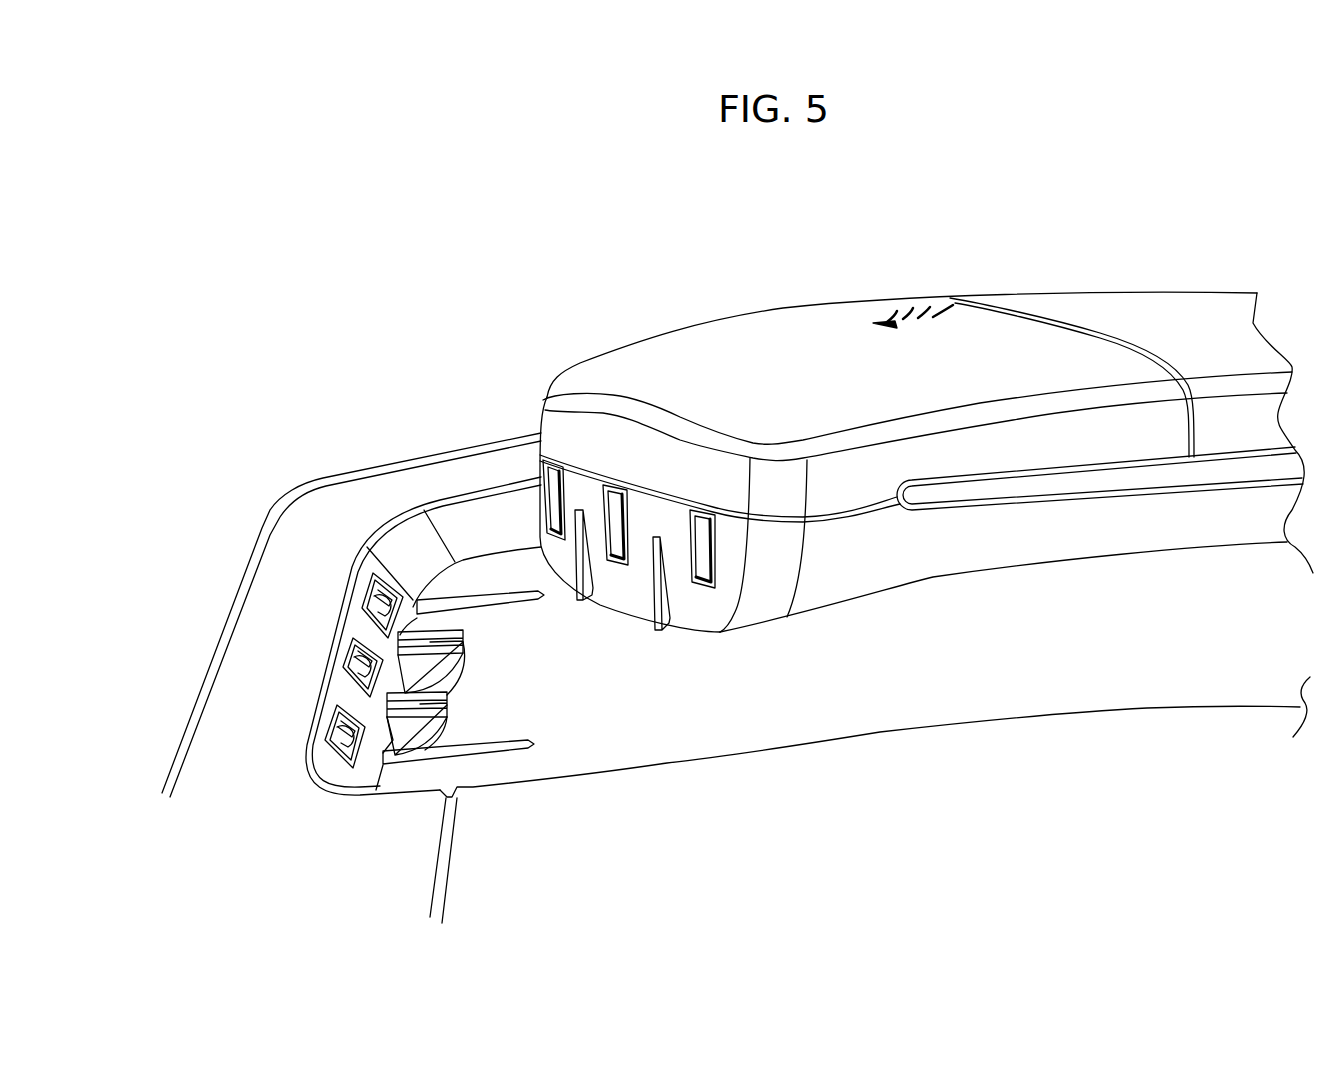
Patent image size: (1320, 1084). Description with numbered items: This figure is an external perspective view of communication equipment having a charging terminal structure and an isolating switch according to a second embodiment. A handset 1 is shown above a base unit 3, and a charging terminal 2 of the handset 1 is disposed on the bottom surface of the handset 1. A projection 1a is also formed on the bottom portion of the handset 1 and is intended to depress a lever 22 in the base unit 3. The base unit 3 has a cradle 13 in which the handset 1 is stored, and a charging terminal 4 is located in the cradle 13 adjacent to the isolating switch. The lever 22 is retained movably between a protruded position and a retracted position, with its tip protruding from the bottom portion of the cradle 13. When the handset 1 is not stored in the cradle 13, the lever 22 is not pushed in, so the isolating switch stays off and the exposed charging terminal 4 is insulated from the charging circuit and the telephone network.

The handset 1 is at (788, 310).
The projection 1a is at (653, 623).
The charging terminal 2 is at (695, 510).
The base unit 3 is at (287, 488).
The charging terminal 4 is at (336, 707).
The cradle 13 is at (768, 710).
The lever 22 is at (452, 703).